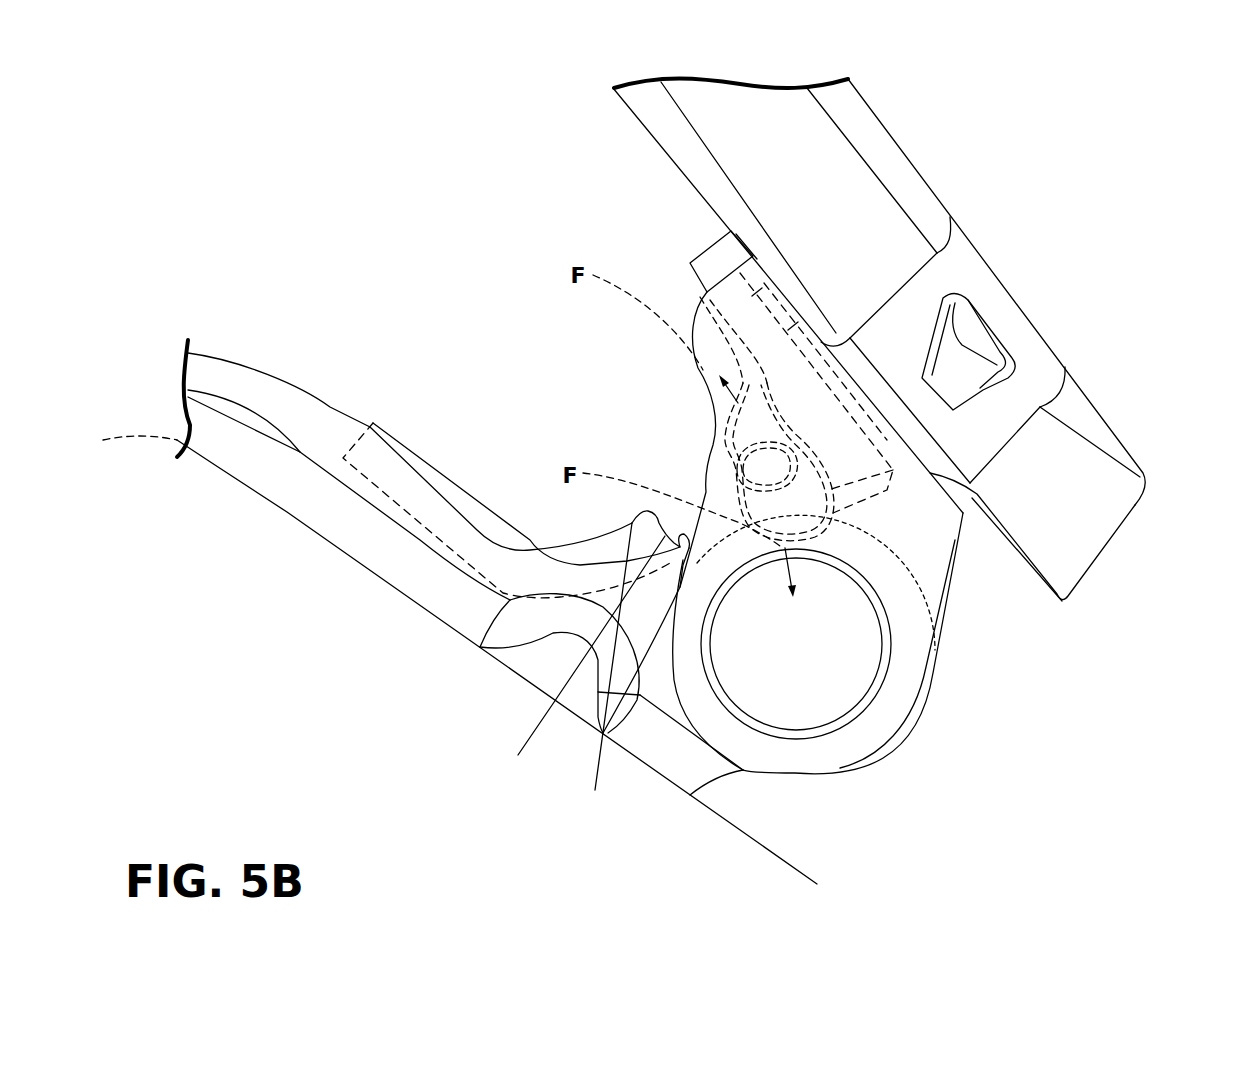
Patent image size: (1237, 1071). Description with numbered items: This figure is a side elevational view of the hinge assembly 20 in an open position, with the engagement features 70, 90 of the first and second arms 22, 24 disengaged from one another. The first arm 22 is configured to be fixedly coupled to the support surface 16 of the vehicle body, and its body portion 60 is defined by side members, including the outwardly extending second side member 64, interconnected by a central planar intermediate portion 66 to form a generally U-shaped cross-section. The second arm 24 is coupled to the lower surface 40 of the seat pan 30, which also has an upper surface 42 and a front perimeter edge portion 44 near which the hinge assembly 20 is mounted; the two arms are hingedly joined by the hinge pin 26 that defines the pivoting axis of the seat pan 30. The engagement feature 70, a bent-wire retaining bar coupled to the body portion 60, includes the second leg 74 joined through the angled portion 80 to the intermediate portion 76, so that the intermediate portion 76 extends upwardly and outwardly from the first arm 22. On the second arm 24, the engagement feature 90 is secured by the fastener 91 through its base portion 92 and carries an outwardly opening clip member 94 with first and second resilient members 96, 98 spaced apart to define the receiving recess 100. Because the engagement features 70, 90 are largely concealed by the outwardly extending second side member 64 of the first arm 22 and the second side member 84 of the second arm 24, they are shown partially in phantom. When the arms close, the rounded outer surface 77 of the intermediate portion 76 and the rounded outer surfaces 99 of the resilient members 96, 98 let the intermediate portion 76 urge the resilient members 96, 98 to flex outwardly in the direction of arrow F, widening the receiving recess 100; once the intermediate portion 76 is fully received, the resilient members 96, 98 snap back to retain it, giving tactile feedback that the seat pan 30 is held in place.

The support surface 16 is at (793, 848).
The hinge assembly 20 is at (320, 591).
The first arm 22 is at (262, 355).
The second arm 24 is at (998, 587).
The hinge pin 26 is at (857, 677).
The seat pan 30 is at (910, 98).
The lower surface 40 is at (633, 108).
The upper surface 42 is at (931, 187).
The front perimeter edge portion 44 is at (1113, 543).
The body portion 60 is at (314, 383).
The second side member 64 is at (218, 377).
The central planar intermediate portion 66 is at (287, 510).
The engagement feature 70 is at (429, 453).
The second leg 74 is at (390, 433).
The intermediate portion 76 is at (606, 672).
The rounded outer surface 77 is at (574, 658).
The angled portion 80 is at (530, 547).
The second side member 84 is at (937, 573).
The engagement feature 90 is at (710, 218).
The fastener 91 is at (690, 335).
The base portion 92 is at (707, 263).
The clip member 94 is at (697, 375).
The first resilient member 96 is at (705, 396).
The second resilient member 98 is at (737, 480).
The rounded outer surfaces 99 is at (700, 517).
The receiving recess 100 is at (725, 445).